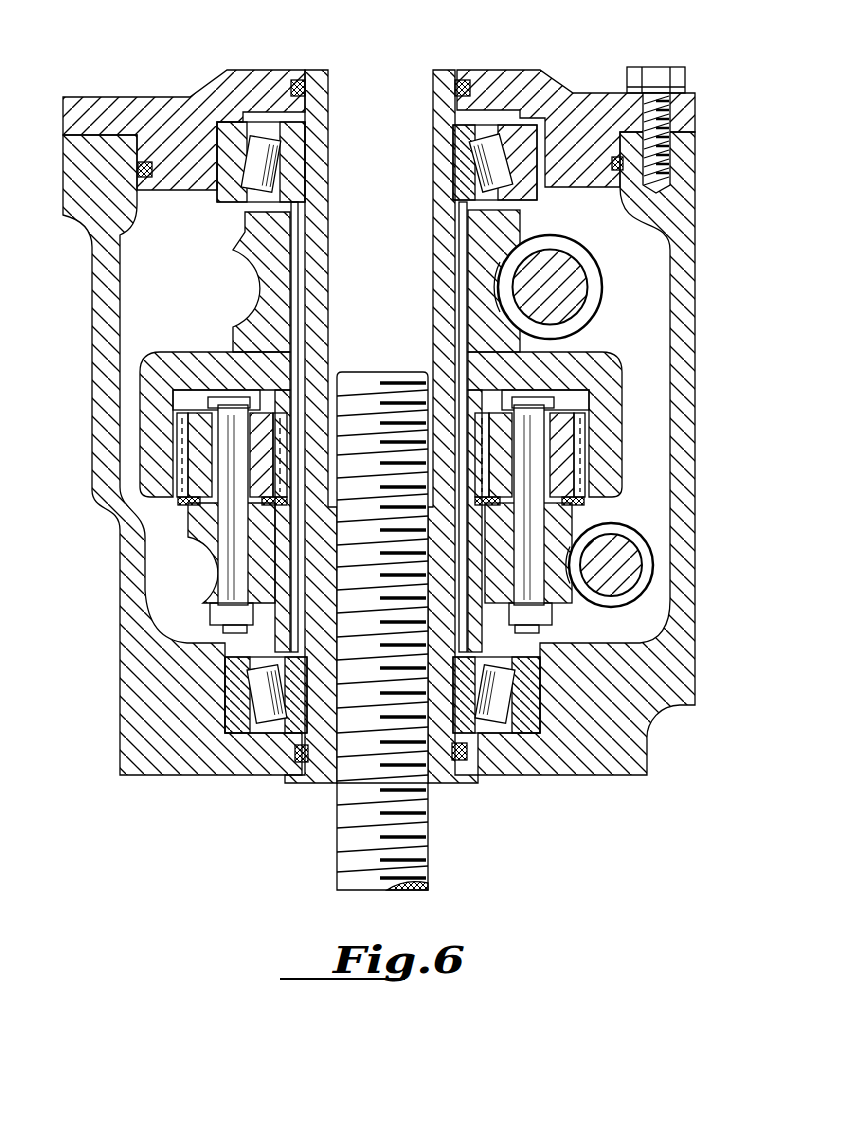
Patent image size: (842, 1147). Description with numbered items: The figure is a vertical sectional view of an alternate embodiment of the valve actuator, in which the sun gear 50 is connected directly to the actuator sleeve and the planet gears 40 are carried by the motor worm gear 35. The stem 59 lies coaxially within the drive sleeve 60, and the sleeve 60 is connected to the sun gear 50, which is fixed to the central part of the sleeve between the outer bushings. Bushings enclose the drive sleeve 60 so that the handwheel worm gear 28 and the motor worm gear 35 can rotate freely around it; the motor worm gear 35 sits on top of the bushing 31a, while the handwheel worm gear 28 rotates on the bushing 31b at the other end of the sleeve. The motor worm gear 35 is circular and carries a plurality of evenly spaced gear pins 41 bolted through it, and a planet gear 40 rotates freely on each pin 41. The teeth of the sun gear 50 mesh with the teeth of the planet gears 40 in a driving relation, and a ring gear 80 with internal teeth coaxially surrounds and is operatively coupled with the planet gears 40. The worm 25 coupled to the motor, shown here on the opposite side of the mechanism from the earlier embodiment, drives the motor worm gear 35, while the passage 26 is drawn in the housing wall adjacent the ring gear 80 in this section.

The drive sleeve 60 is at (318, 134).
The bushing 31b is at (518, 135).
The bushing 31a is at (245, 713).
The handwheel worm gear 28 is at (268, 242).
The passage 26 is at (573, 277).
The sun gear 50 is at (302, 432).
The ring gear 80 is at (610, 388).
The planet gear 40 is at (178, 500).
The worm 25 is at (623, 577).
The motor worm gear 35 is at (207, 570).
The gear pin 41 is at (227, 587).
The stem 59 is at (402, 826).